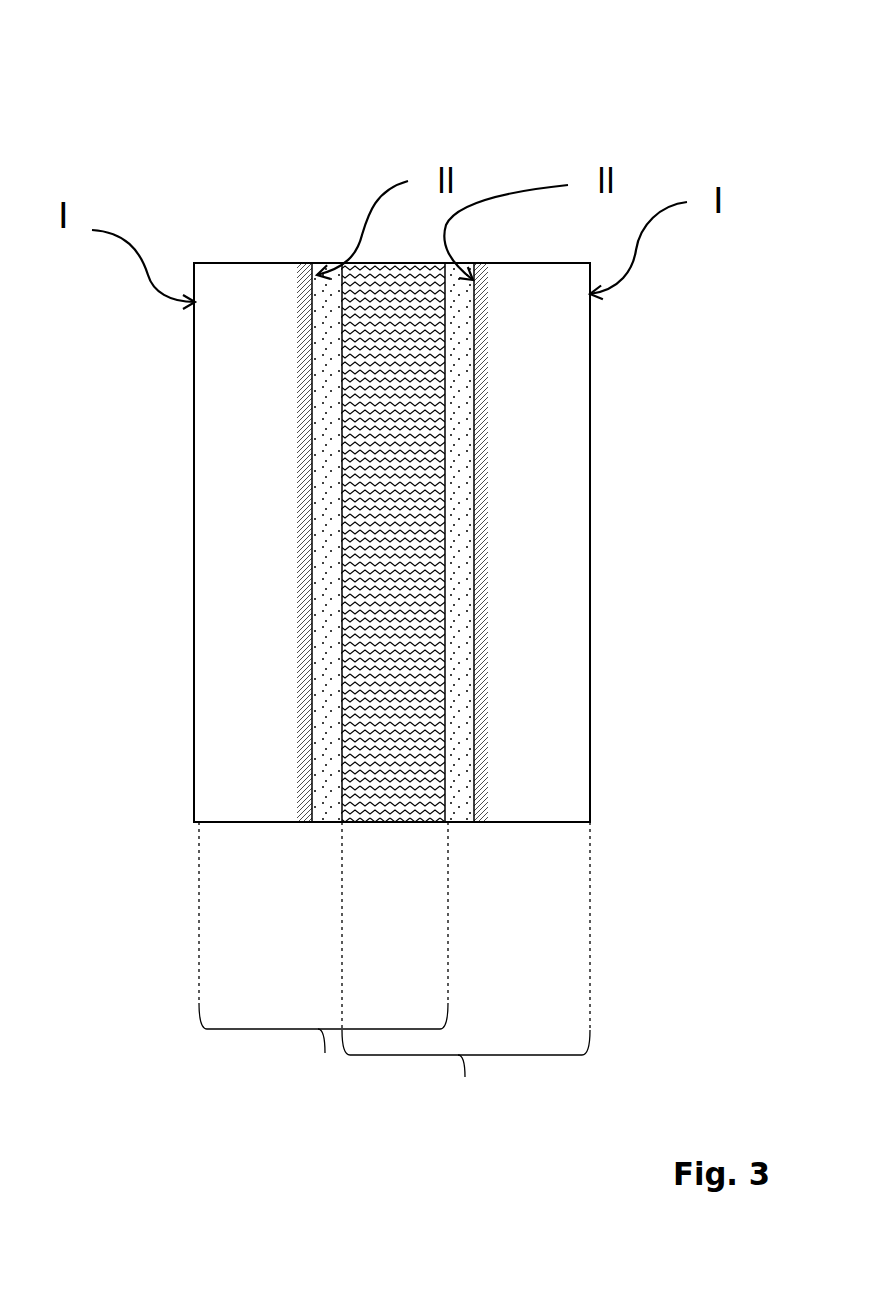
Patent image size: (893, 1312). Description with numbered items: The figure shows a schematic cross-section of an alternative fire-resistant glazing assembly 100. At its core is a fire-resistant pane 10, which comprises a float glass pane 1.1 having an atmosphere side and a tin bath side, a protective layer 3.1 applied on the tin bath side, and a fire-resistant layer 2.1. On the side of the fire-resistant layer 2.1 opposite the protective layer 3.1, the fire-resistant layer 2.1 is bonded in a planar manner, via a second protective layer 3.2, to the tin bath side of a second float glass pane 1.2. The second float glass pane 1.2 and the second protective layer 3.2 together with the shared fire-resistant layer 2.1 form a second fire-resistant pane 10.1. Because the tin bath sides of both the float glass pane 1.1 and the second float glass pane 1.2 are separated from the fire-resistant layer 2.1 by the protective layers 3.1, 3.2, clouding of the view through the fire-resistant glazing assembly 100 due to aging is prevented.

The fire-resistant glazing assembly 100 is at (180, 178).
The float glass pane 1.1 is at (217, 782).
The second float glass pane 1.2 is at (532, 800).
The protective layer 3.1 is at (327, 802).
The fire-resistant layer 2.1 is at (388, 802).
The second protective layer 3.2 is at (458, 802).
The fire-resistant pane 10 is at (323, 965).
The fire-resistant pane 10.1 is at (466, 978).